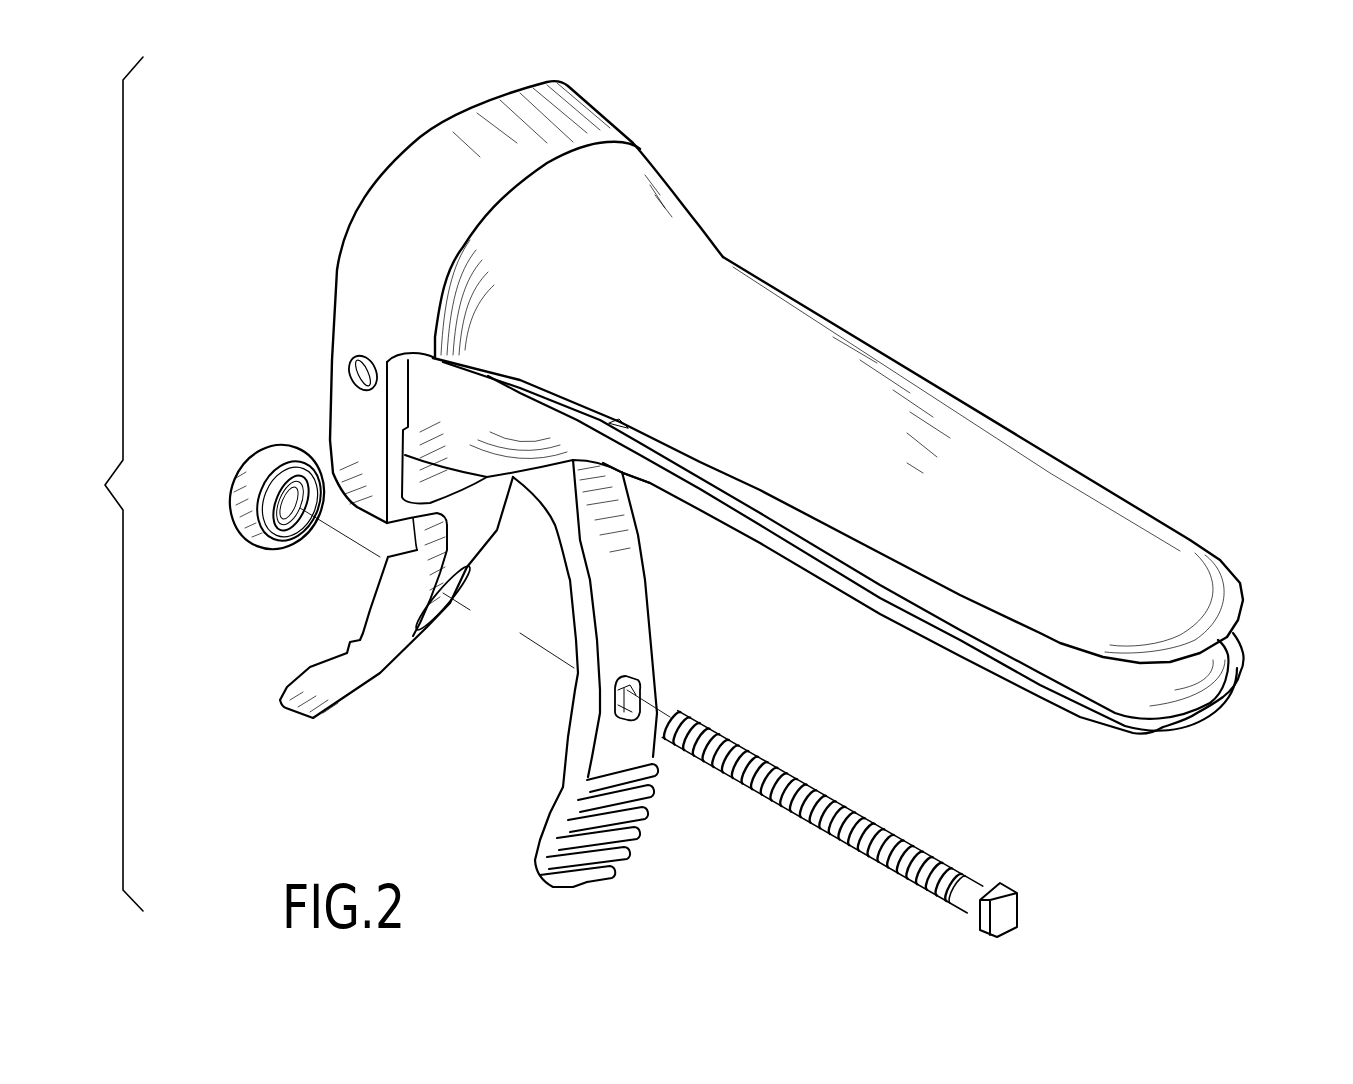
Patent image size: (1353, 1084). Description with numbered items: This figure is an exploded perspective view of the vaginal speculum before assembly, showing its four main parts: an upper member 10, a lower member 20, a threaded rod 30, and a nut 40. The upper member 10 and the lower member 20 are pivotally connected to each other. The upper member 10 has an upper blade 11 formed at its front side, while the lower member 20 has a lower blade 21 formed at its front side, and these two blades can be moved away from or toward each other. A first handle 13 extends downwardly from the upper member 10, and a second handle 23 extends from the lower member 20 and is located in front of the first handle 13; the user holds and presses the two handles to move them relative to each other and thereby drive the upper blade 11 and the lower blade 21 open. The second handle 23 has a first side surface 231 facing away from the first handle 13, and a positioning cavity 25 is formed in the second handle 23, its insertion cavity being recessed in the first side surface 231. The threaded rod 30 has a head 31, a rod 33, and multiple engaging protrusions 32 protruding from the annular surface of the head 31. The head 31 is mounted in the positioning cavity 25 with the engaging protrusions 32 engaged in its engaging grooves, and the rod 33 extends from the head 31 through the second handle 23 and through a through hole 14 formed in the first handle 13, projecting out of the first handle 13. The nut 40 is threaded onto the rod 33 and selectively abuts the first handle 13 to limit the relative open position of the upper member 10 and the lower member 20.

The upper member 10 is at (792, 415).
The upper blade 11 is at (1182, 552).
The first handle 13 is at (396, 613).
The through hole 14 is at (430, 620).
The lower member 20 is at (1094, 737).
The lower blade 21 is at (1187, 730).
The second handle 23 is at (638, 673).
The first side surface 231 is at (640, 603).
The positioning cavity 25 is at (650, 677).
The threaded rod 30 is at (895, 824).
The head 31 is at (1028, 914).
The engaging protrusions 32 is at (1021, 884).
The rod 33 is at (921, 889).
The nut 40 is at (253, 513).